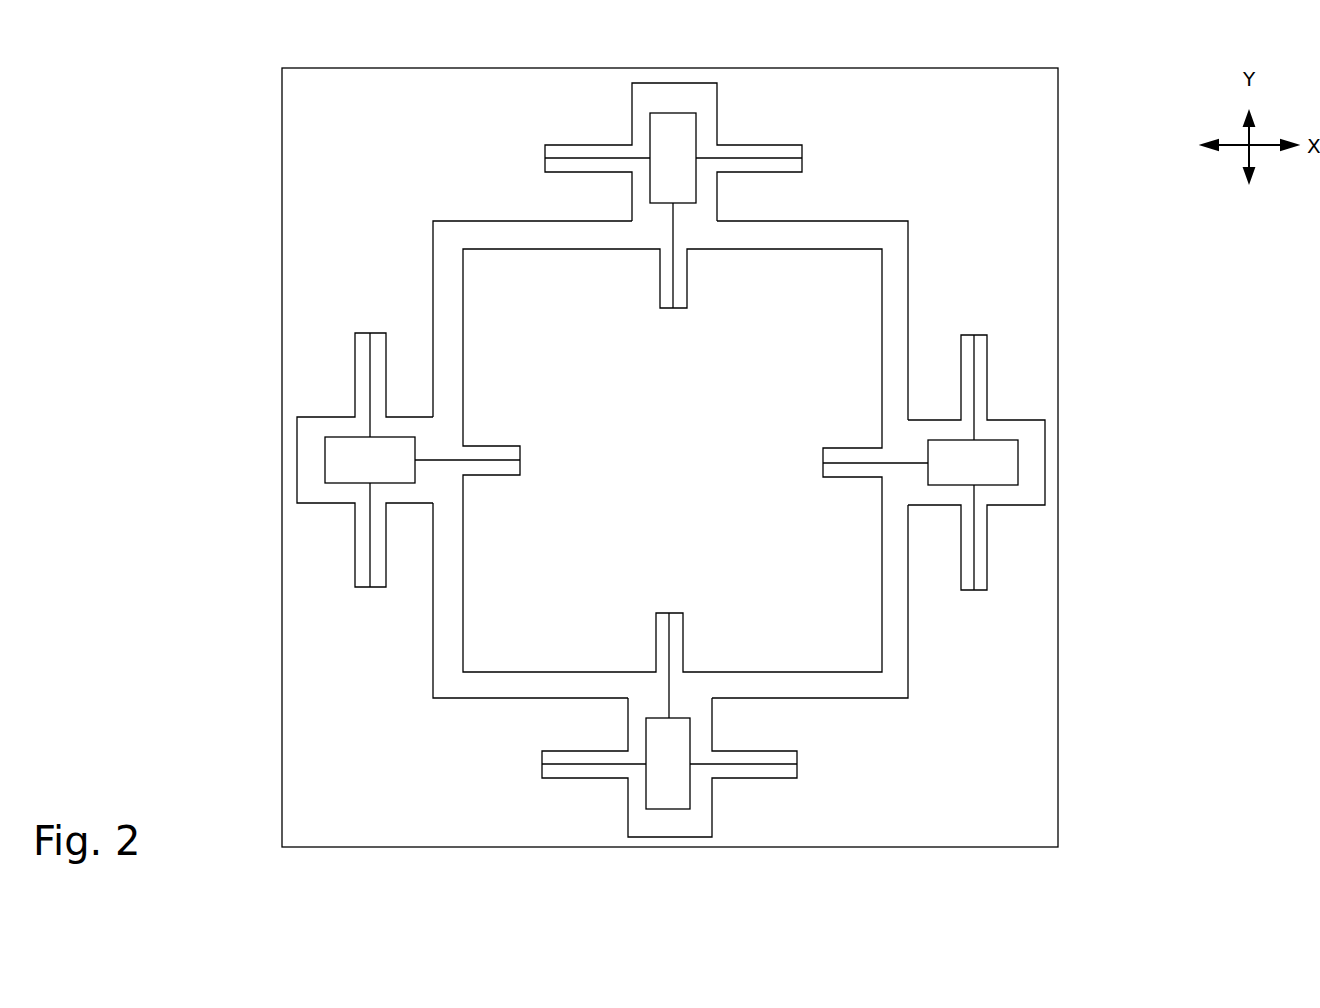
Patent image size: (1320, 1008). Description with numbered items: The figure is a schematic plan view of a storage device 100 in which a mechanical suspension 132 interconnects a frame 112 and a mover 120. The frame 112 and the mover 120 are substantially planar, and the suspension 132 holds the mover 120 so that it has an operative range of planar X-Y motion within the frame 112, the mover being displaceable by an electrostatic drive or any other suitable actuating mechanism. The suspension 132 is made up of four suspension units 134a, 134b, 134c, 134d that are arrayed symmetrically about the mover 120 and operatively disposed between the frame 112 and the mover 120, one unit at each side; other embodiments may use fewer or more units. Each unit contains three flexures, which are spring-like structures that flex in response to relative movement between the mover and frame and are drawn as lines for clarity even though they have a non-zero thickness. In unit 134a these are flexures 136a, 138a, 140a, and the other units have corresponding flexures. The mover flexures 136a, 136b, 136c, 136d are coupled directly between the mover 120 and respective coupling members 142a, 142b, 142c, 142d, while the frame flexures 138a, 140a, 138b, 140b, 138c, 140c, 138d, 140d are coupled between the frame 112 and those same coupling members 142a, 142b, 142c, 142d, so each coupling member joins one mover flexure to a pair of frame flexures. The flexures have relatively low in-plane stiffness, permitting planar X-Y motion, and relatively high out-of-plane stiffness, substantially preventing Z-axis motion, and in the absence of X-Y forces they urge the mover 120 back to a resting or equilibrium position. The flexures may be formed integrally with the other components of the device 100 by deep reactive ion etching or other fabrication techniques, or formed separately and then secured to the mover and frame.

The storage device 100 is at (230, 166).
The frame 112 is at (284, 237).
The mover 120 is at (463, 267).
The mechanical suspension 132 is at (347, 676).
The suspension unit 134a is at (323, 489).
The suspension unit 134b is at (632, 93).
The suspension unit 134c is at (1030, 495).
The suspension unit 134d is at (636, 808).
The mover flexure 136a is at (553, 431).
The mover flexure 136b is at (672, 258).
The mover flexure 136c is at (875, 460).
The mover flexure 136d is at (668, 662).
The frame flexure 138a is at (369, 530).
The frame flexure 138b is at (593, 158).
The frame flexure 138c is at (973, 372).
The frame flexure 138d is at (780, 765).
The frame flexure 140a is at (369, 352).
The frame flexure 140b is at (785, 158).
The frame flexure 140c is at (973, 528).
The frame flexure 140d is at (593, 765).
The coupling member 142a is at (325, 460).
The coupling member 142b is at (674, 113).
The coupling member 142c is at (1018, 464).
The coupling member 142d is at (667, 810).